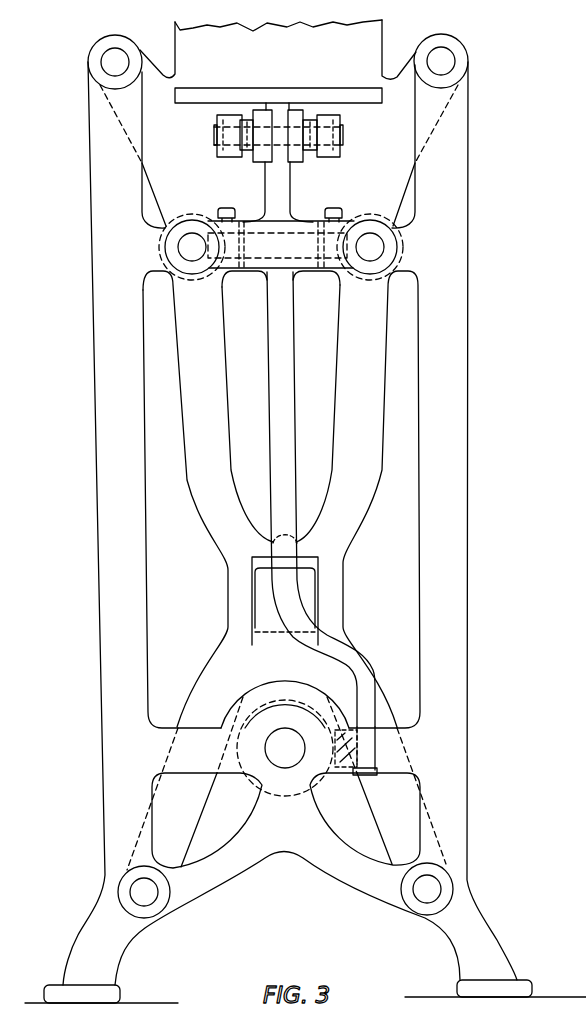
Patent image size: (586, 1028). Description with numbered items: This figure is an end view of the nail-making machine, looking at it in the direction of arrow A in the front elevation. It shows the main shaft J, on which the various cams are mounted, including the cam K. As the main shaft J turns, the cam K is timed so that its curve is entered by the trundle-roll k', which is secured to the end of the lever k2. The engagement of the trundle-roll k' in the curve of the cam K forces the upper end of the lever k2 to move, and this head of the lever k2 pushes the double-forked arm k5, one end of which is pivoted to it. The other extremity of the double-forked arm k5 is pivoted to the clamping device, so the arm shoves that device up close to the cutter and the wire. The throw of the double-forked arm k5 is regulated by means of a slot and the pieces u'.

The cam K is at (325, 787).
The main shaft J is at (285, 750).
The lever k2 is at (280, 423).
The trundle-roll k' is at (367, 773).
The double-forked arm k5 is at (331, 135).
The pieces u' is at (285, 158).